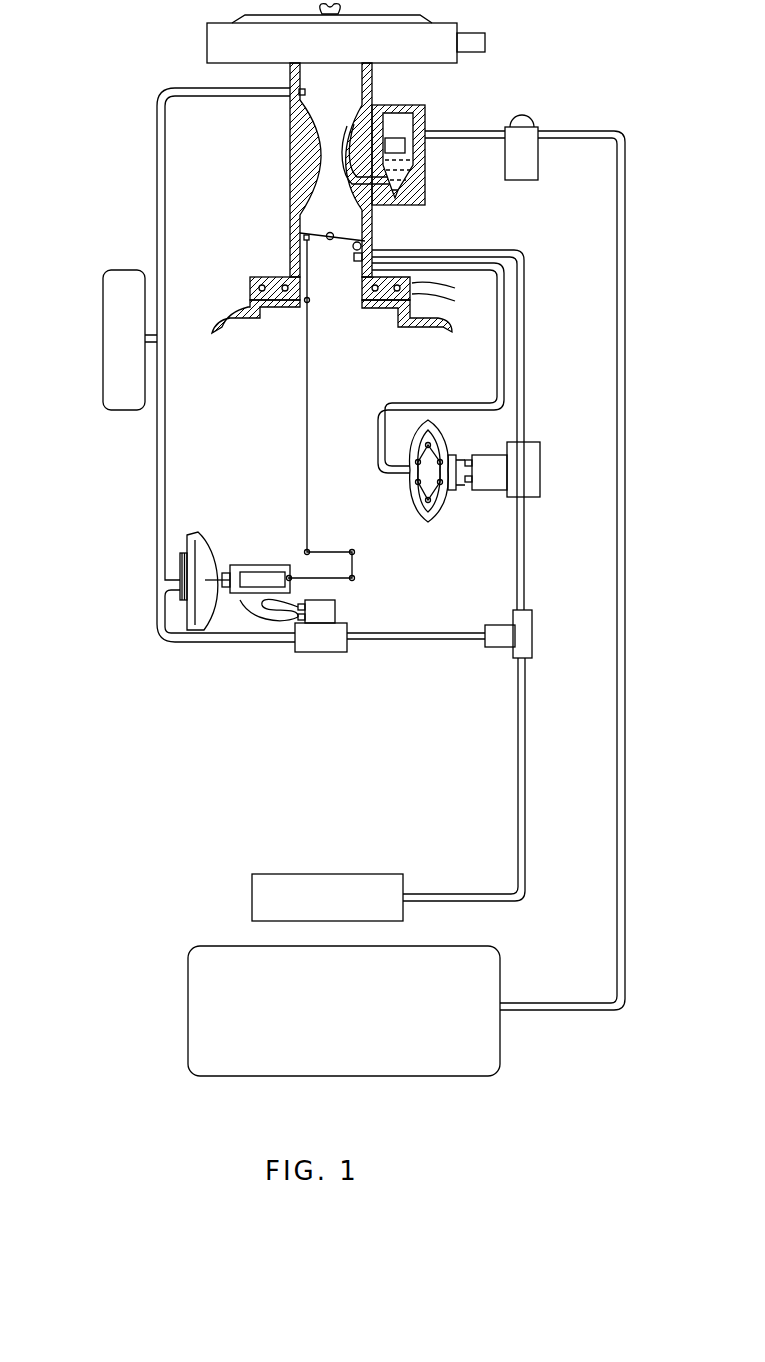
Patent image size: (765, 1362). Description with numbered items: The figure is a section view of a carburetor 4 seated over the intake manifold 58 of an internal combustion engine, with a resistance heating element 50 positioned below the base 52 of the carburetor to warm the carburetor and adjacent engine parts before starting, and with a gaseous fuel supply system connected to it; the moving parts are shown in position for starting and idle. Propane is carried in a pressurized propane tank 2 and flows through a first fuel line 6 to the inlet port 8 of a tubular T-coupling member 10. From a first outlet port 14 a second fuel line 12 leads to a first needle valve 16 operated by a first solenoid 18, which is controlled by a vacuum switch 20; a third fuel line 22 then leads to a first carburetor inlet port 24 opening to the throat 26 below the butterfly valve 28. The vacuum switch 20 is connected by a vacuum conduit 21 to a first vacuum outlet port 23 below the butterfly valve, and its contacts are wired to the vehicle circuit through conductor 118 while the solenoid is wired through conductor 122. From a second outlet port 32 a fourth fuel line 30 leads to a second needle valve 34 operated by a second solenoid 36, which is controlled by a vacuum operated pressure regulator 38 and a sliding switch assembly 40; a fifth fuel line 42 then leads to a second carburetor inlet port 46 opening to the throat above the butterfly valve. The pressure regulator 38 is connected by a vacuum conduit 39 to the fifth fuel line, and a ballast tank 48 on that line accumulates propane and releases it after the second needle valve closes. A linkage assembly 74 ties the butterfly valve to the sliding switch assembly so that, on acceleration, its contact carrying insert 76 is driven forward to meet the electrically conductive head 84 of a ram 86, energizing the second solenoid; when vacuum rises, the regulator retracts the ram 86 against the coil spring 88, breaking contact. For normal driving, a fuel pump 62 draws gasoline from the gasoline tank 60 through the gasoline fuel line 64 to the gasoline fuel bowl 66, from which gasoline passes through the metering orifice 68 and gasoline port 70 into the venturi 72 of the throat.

The propane tank 2 is at (265, 874).
The carburetor 4 is at (290, 80).
The first fuel line 6 is at (518, 812).
The inlet port 8 is at (512, 652).
The T-coupling member 10 is at (532, 625).
The second fuel line 12 is at (525, 562).
The first outlet port 14 is at (515, 615).
The first needle valve 16 is at (540, 452).
The first solenoid 18 is at (486, 455).
The vacuum switch 20 is at (411, 495).
The vacuum conduit 21 is at (503, 368).
The third fuel line 22 is at (525, 362).
The first vacuum outlet port 23 is at (357, 265).
The first carburetor inlet port 24 is at (365, 240).
The throat 26 is at (300, 200).
The butterfly valve 28 is at (336, 243).
The fourth fuel line 30 is at (400, 641).
The second outlet port 32 is at (487, 628).
The second needle valve 34 is at (310, 652).
The second solenoid 36 is at (335, 612).
The pressure regulator 38 is at (205, 535).
The vacuum conduit 39 is at (185, 553).
The sliding switch assembly 40 is at (260, 565).
The fifth fuel line 42 is at (157, 500).
The second carburetor inlet port 46 is at (305, 92).
The ballast tank 48 is at (103, 335).
The resistance heating element 50 is at (250, 284).
The base 52 is at (292, 272).
The intake manifold 58 is at (268, 312).
The gasoline tank 60 is at (188, 1031).
The fuel pump 62 is at (538, 126).
The gasoline fuel line 64 is at (626, 362).
The gasoline fuel bowl 66 is at (425, 120).
The metering orifice 68 is at (402, 182).
The gasoline port 70 is at (346, 128).
The venturi 72 is at (300, 140).
The linkage assembly 74 is at (309, 400).
The contact carrying insert 76 is at (272, 600).
The electrically conductive head 84 is at (240, 594).
The ram 86 is at (200, 626).
The coil spring 88 is at (226, 570).
The conductor 118 is at (450, 522).
The conductor 122 is at (475, 496).